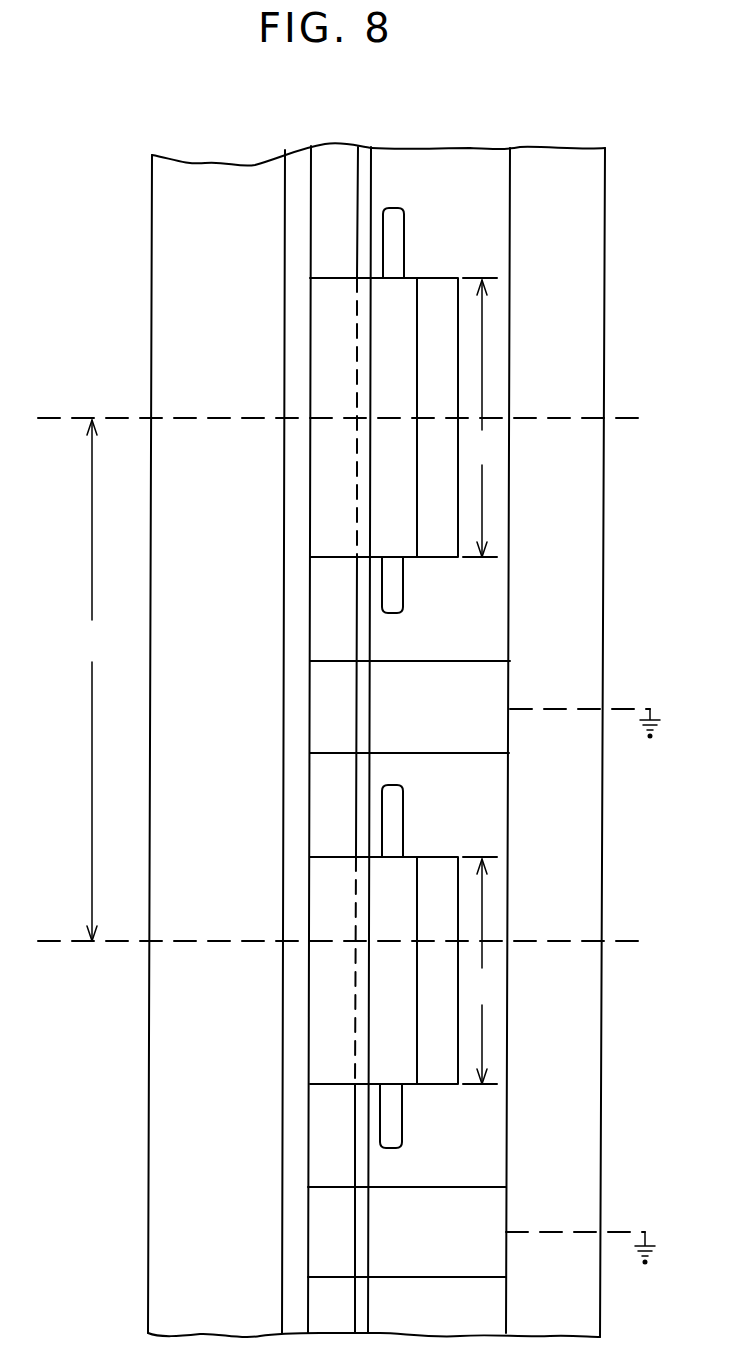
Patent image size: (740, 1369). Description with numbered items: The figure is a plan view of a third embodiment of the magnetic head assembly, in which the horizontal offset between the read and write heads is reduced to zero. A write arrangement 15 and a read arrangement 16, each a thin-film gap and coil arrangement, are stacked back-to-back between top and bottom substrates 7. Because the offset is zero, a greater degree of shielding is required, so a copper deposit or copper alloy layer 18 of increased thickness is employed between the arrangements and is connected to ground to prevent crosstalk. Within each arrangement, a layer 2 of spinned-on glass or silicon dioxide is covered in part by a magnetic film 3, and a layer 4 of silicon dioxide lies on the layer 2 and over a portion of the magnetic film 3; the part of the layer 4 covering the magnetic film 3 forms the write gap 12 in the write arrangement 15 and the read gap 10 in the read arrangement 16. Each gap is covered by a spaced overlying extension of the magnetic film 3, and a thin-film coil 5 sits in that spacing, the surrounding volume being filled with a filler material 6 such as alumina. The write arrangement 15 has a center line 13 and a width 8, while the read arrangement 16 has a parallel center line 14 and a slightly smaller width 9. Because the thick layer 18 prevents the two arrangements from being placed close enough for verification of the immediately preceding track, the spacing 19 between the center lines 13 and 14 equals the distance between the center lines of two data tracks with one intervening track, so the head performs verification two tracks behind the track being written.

The layer of spinned-on glass or silicon dioxide 2 is at (302, 168).
The magnetic film 3 is at (333, 163).
The layer of silicon dioxide 4 is at (367, 165).
The thin-film coil 5 is at (392, 216).
The filler material 6 is at (448, 162).
The top and bottom substrates 7 is at (218, 183).
The width of the write arrangement 8 is at (480, 417).
The width of the read arrangement 9 is at (480, 970).
The read gap 10 is at (358, 1023).
The write gap 12 is at (364, 356).
The center line of the write arrangement 13 is at (225, 418).
The center line of the read arrangement 14 is at (210, 941).
The write arrangement 15 is at (421, 279).
The read arrangement 16 is at (419, 857).
The copper deposit or copper alloy layer of increased thickness 18 is at (453, 678).
The spacing between the center lines 19 is at (92, 680).